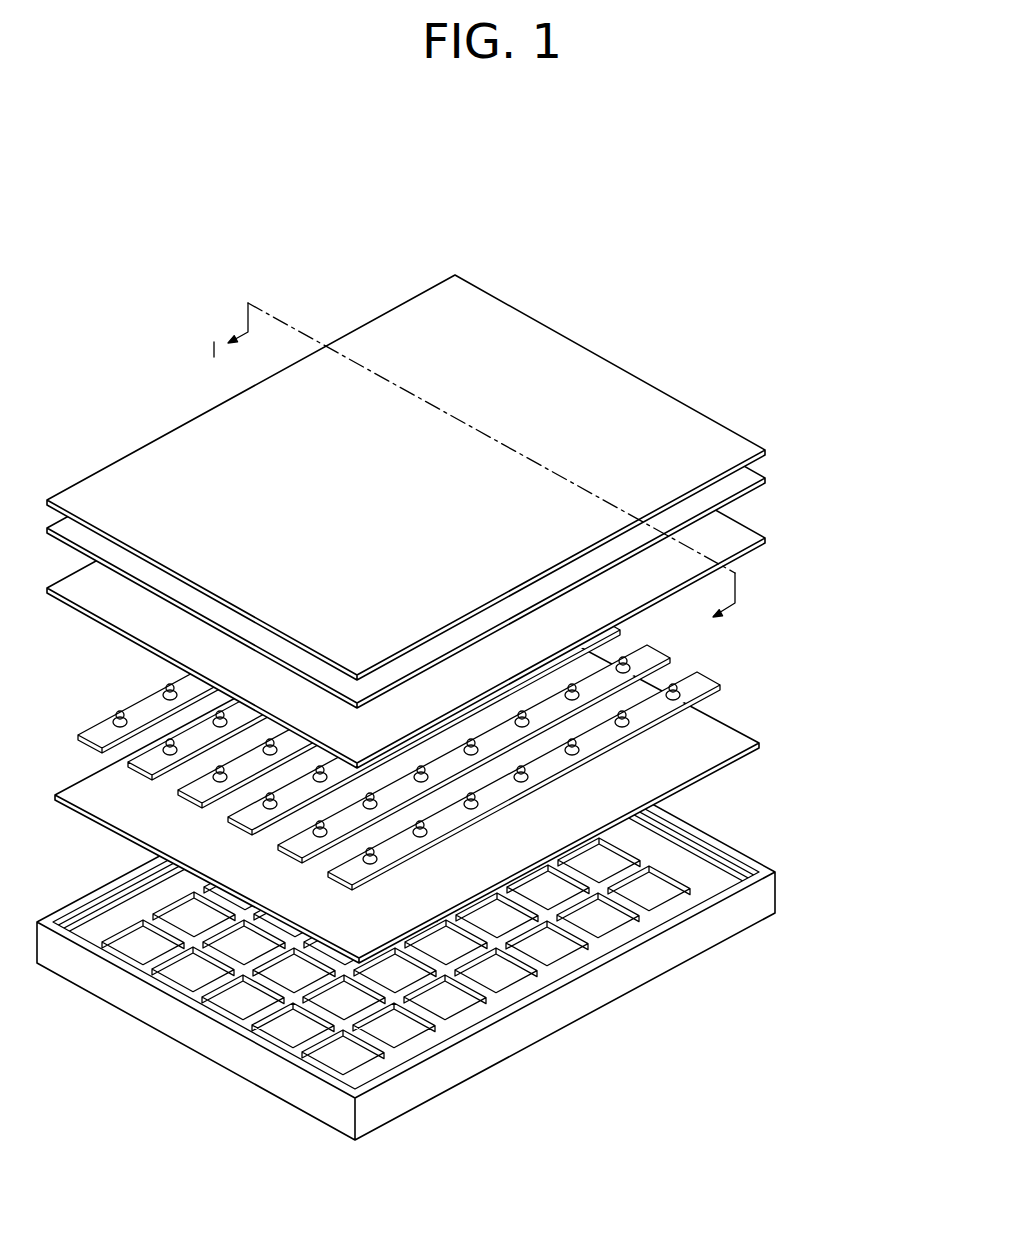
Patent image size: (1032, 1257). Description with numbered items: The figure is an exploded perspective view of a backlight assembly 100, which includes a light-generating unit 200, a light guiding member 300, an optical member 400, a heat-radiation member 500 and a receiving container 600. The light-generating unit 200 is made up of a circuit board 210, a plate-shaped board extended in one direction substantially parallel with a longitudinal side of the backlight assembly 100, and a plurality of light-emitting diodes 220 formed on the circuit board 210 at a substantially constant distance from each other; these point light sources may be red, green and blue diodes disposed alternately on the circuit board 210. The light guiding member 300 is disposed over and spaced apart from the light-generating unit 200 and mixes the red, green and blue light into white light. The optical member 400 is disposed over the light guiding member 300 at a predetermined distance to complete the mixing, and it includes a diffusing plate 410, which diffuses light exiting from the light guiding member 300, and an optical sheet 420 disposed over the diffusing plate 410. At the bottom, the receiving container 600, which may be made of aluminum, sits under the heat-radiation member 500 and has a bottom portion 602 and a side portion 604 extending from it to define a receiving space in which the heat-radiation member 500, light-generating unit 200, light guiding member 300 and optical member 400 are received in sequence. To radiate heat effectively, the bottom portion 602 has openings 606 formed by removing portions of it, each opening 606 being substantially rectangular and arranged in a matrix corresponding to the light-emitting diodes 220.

The backlight assembly 100 is at (472, 201).
The light-generating unit 200 is at (454, 712).
The circuit board 210 is at (696, 681).
The light-emitting diodes 220 is at (676, 682).
The light guiding member 300 is at (767, 538).
The optical member 400 is at (472, 491).
The diffusing plate 410 is at (767, 478).
The optical sheet 420 is at (767, 450).
The heat-radiation member 500 is at (761, 745).
The receiving container 600 is at (451, 918).
The bottom portion 602 is at (662, 862).
The side portion 604 is at (722, 924).
The opening 606 is at (655, 879).